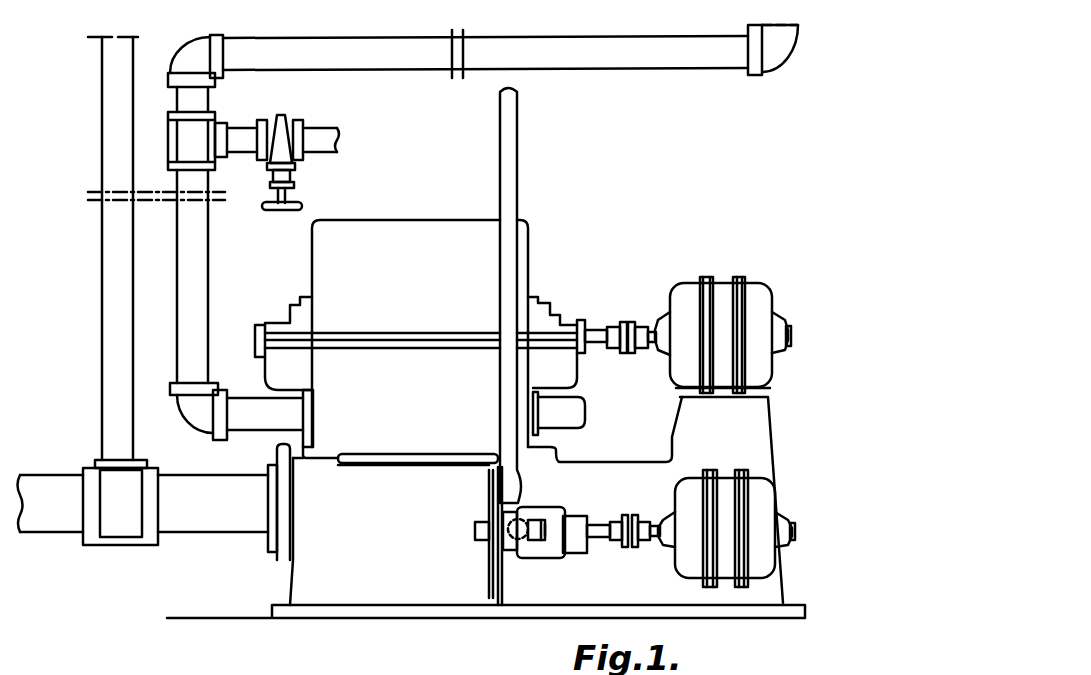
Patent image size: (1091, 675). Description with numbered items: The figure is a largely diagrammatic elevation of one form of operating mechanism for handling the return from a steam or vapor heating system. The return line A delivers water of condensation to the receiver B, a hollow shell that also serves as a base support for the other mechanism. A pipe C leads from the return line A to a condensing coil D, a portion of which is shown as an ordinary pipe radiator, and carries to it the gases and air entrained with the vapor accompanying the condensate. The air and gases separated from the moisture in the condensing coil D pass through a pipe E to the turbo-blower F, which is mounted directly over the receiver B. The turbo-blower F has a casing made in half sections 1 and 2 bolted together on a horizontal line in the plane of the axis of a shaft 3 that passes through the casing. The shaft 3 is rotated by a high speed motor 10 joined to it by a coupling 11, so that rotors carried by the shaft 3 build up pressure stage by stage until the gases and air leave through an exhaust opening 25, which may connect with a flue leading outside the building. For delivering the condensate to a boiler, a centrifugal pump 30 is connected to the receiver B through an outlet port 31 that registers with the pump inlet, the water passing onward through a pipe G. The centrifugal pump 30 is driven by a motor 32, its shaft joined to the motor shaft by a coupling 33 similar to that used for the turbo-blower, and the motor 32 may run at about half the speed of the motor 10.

The half section 1 is at (420, 288).
The half section 2 is at (421, 401).
The shaft 3 is at (598, 330).
The high speed motor 10 is at (723, 290).
The coupling 11 is at (633, 350).
The exhaust opening 25 is at (559, 413).
The centrifugal pump 30 is at (489, 501).
The outlet port 31 is at (527, 518).
The motor 32 is at (726, 528).
The coupling 33 is at (632, 515).
The return line A is at (143, 502).
The receiver B is at (486, 531).
The pipe C is at (156, 248).
The condensing coil D is at (510, 51).
The pipe E is at (178, 312).
The turbo-blower F is at (420, 341).
The pipe G is at (514, 204).